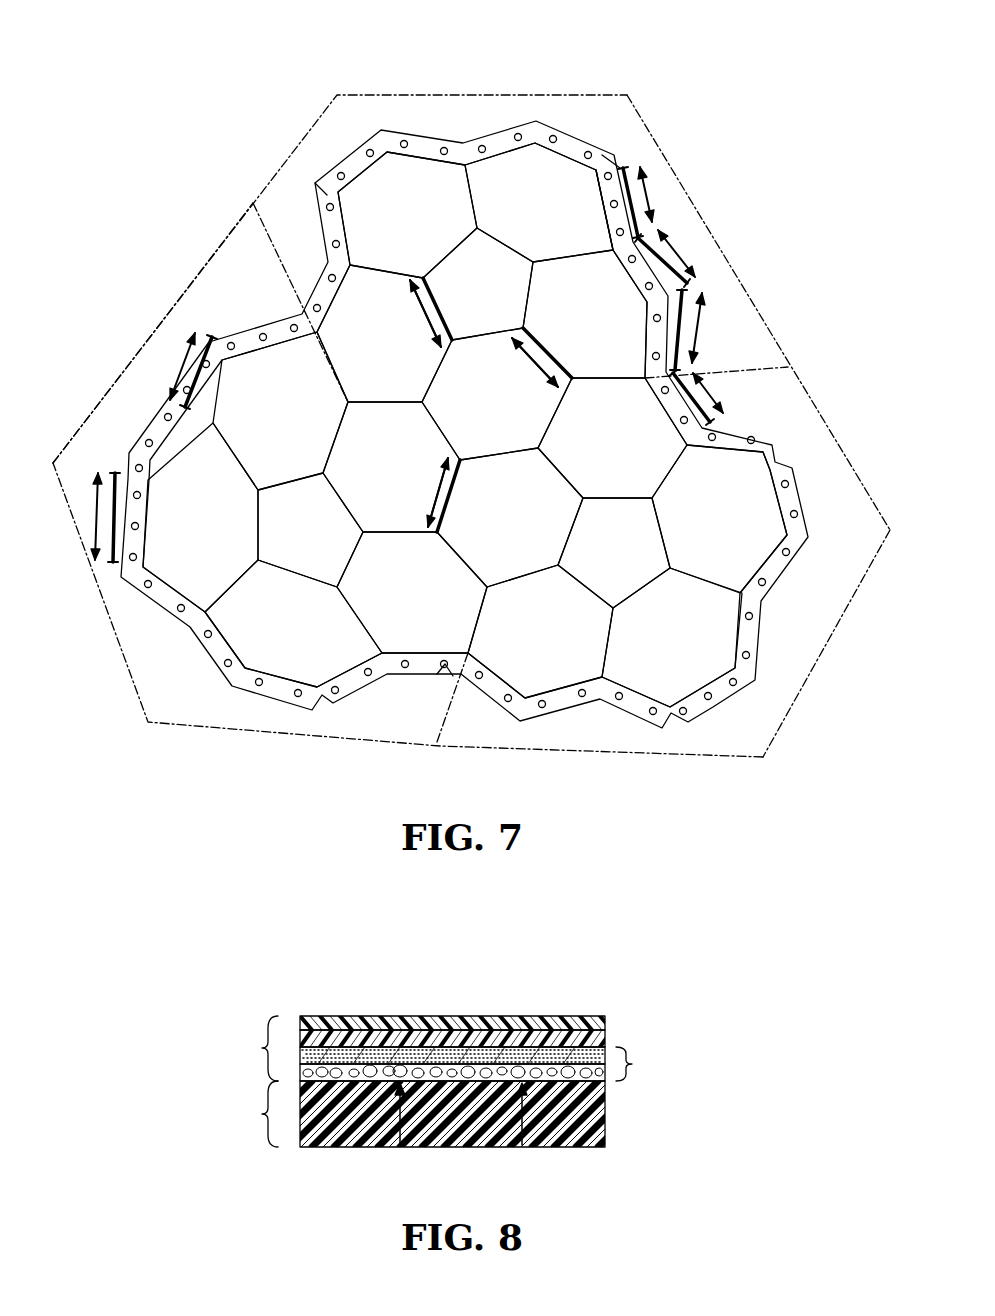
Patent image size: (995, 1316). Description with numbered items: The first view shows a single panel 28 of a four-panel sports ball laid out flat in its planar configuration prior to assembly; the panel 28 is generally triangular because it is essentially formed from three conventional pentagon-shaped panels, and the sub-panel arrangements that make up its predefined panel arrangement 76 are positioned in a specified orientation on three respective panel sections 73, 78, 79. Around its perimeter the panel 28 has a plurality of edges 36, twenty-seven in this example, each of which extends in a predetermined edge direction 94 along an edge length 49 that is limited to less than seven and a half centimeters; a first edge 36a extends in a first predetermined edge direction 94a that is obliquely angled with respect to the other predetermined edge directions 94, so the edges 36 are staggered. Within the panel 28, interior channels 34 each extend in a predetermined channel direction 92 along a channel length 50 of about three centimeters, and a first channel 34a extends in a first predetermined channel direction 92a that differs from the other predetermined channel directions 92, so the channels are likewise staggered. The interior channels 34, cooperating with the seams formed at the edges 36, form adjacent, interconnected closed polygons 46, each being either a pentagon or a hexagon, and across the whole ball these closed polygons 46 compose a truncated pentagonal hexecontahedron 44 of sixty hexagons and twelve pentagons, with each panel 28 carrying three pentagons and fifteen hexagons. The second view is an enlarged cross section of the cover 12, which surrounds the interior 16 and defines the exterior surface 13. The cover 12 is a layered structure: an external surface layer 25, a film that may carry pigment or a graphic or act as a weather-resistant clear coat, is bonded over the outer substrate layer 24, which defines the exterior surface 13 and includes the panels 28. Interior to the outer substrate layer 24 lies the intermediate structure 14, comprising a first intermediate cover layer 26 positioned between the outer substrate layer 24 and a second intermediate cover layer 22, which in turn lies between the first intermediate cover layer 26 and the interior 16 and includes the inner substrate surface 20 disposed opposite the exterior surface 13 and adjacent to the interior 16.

In FIG. 7, the panel 28 is at (146, 202).
In FIG. 7, the predefined panel arrangement 76 is at (754, 50).
In FIG. 7, the panel section 73 is at (635, 108).
In FIG. 7, the panel section 78 is at (805, 677).
In FIG. 7, the panel section 79 is at (90, 412).
In FIG. 7, the edges 36 is at (355, 157).
In FIG. 7, the first edge 36a is at (613, 212).
In FIG. 7, the truncated pentagonal hexecontahedron 44 is at (464, 418).
In FIG. 7, the closed polygons 46 is at (612, 542).
In FIG. 7, the channel length 50 is at (432, 315).
In FIG. 7, the predetermined channel direction 92 is at (430, 318).
In FIG. 7, the first predetermined channel direction 92a is at (440, 485).
In FIG. 7, the interior channel 34 is at (425, 318).
In FIG. 7, the first channel 34a is at (447, 500).
In FIG. 7, the predetermined edge direction 94 is at (668, 265).
In FIG. 7, the first predetermined edge direction 94a is at (634, 200).
In FIG. 7, the edge length 49 is at (624, 193).
In FIG. 8, the exterior surface 13 is at (461, 1008).
In FIG. 8, the cover 12 is at (262, 1048).
In FIG. 8, the external surface layer 25 is at (565, 1016).
In FIG. 8, the outer substrate layer 24 is at (597, 1033).
In FIG. 8, the first intermediate cover layer 26 is at (606, 1050).
In FIG. 8, the intermediate structure 14 is at (633, 1064).
In FIG. 8, the second intermediate cover layer 22 is at (602, 1073).
In FIG. 8, the interior 16 is at (262, 1114).
In FIG. 8, the inner substrate surface 20 is at (400, 1145).